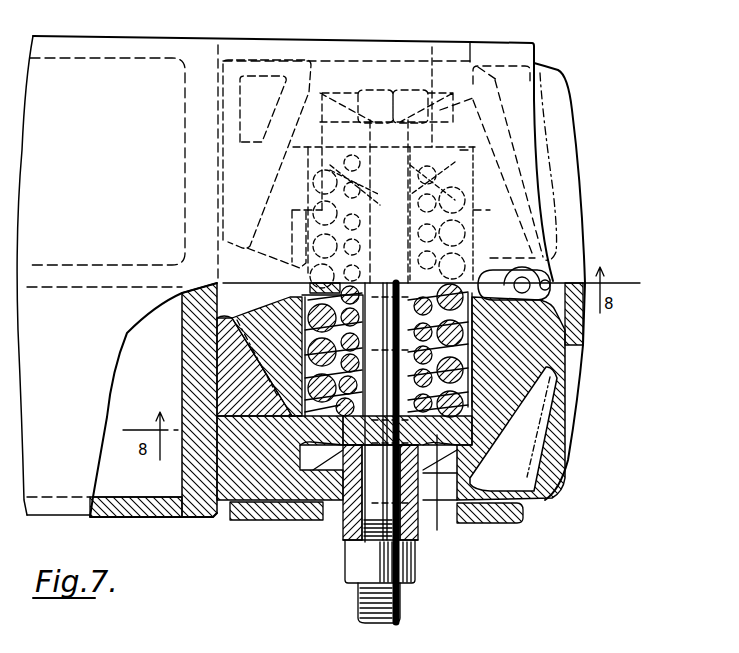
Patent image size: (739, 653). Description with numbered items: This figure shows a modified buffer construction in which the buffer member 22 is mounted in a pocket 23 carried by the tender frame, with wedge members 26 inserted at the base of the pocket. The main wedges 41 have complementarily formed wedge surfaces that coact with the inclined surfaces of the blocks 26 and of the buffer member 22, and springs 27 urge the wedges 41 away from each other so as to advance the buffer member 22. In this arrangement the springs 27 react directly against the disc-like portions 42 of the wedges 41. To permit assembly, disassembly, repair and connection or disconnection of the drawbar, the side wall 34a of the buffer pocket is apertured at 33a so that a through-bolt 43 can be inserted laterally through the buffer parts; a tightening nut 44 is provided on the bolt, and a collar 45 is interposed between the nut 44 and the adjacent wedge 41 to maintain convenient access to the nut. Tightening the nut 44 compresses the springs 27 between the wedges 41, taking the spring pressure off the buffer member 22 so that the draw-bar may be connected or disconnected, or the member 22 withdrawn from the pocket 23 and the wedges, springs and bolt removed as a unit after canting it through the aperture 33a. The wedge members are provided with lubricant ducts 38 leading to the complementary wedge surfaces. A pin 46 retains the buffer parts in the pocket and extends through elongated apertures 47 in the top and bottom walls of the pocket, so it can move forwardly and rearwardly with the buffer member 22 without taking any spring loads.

The buffer member 22 is at (548, 478).
The pocket 23 is at (452, 72).
The wedge members 26 is at (254, 58).
The springs 27 is at (447, 400).
The aperture 33a is at (333, 58).
The side wall 34a is at (290, 58).
The lubricant ducts 38 is at (537, 62).
The wedges 41 is at (425, 358).
The disc-like portions 42 is at (431, 47).
The through-bolt 43 is at (403, 603).
The tightening nut 44 is at (416, 568).
The collar 45 is at (343, 540).
The pin 46 is at (527, 283).
The elongated apertures 47 is at (545, 283).